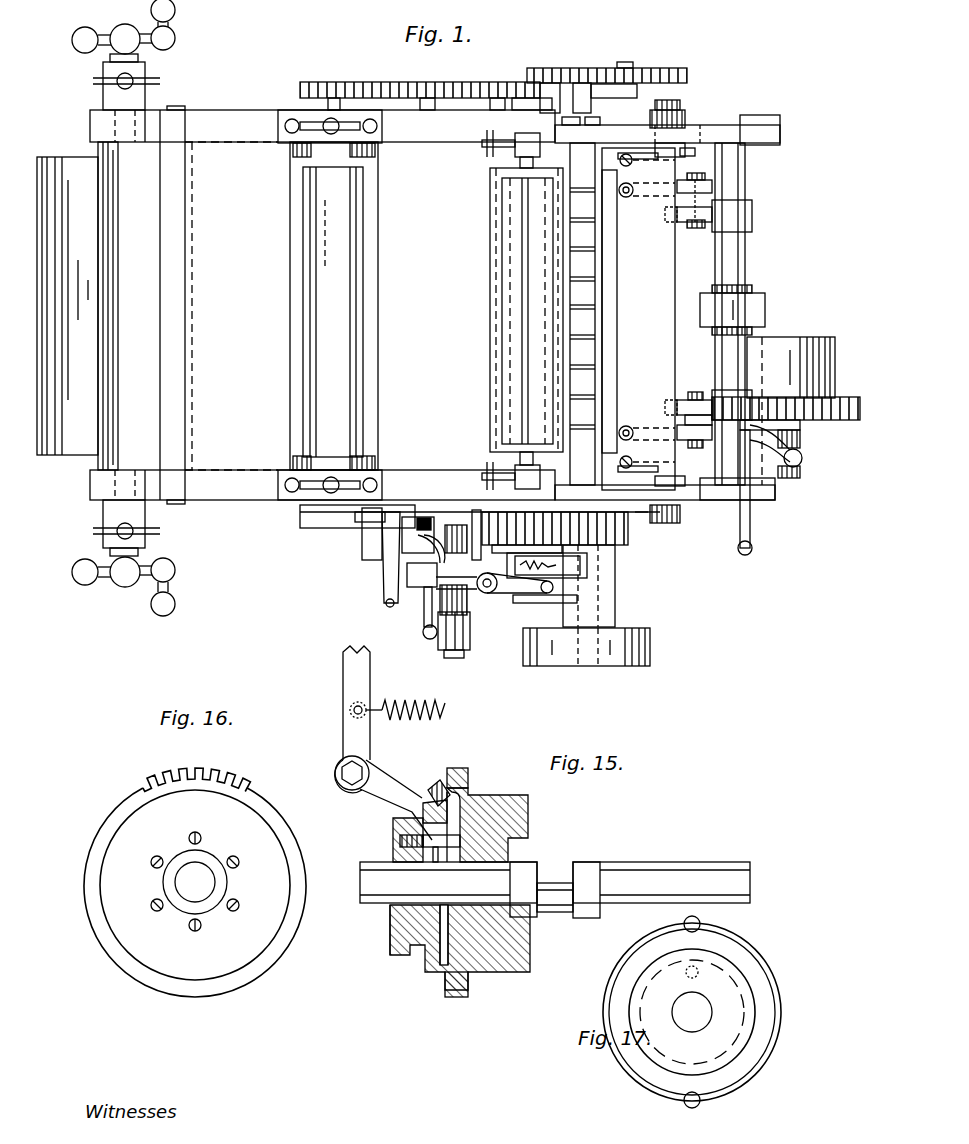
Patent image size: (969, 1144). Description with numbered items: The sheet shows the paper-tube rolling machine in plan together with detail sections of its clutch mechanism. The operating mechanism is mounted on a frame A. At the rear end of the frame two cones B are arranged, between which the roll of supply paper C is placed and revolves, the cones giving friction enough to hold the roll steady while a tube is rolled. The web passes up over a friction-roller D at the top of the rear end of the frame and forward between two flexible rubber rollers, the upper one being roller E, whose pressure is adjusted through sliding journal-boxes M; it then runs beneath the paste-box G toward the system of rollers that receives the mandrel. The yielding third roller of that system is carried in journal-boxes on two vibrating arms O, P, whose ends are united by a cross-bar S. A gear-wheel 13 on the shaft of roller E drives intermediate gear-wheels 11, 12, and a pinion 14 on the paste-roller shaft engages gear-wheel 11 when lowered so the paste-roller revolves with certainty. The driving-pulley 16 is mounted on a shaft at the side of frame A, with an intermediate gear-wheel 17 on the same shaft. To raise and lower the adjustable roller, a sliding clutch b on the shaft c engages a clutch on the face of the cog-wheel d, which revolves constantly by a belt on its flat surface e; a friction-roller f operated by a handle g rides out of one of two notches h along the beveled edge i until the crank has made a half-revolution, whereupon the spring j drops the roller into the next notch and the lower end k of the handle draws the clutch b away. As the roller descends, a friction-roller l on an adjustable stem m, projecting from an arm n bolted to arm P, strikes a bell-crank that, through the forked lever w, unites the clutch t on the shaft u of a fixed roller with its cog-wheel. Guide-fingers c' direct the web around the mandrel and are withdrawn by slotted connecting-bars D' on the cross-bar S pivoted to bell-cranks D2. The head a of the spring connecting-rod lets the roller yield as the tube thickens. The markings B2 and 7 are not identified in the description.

In FIG. 1, the frame A is at (322, 305).
In FIG. 1, the cones B is at (118, 150).
In FIG. 1, the roll of supply paper C is at (67, 306).
In FIG. 1, the friction-roller D is at (114, 306).
In FIG. 1, the upper flexible roller E is at (334, 306).
In FIG. 1, the paste-box G is at (522, 310).
In FIG. 1, the sliding journal-boxes M is at (330, 310).
In FIG. 1, the vibrating arm O is at (667, 307).
In FIG. 1, the vibrating arm P is at (630, 500).
In FIG. 1, the cross-bar S is at (732, 314).
In FIG. 1, the guide-fingers c' is at (582, 314).
In FIG. 1, the bell-cranks D2 is at (708, 195).
In FIG. 1, the slotted connecting-bars D' is at (708, 338).
In FIG. 1, the head a is at (674, 312).
In FIG. 1, the sliding clutch b is at (771, 458).
In FIG. 15, the sliding clutch b is at (381, 930).
In FIG. 15, the shaft c is at (555, 890).
In FIG. 1, the cog-wheel d is at (786, 418).
In FIG. 15, the cog-wheel d is at (458, 882).
In FIG. 1, the flat surface e is at (797, 411).
In FIG. 15, the flat surface e is at (460, 883).
In FIG. 15, the friction-roller f is at (439, 785).
In FIG. 1, the handle g is at (750, 497).
In FIG. 15, the handle g is at (383, 743).
In FIG. 17, the notches h is at (692, 1015).
In FIG. 15, the beveled edge i is at (440, 962).
In FIG. 15, the spring j is at (397, 717).
In FIG. 15, the lower end of handle k is at (400, 813).
In FIG. 1, the friction-roller l is at (348, 525).
In FIG. 1, the adjustable stem m is at (375, 530).
In FIG. 1, the arm n is at (555, 528).
In FIG. 1, the clutch t is at (547, 565).
In FIG. 1, the shaft u is at (527, 549).
In FIG. 1, the forked lever w is at (506, 586).
In FIG. 1, the pawl B2 is at (441, 548).
In FIG. 1, the pawl 7 is at (440, 505).
In FIG. 1, the intermediate gear-wheel 11 is at (496, 86).
In FIG. 1, the intermediate gear-wheel 12 is at (420, 85).
In FIG. 1, the gear-wheel 13 is at (420, 85).
In FIG. 1, the pinion 14 is at (526, 66).
In FIG. 1, the driving-pulley 16 is at (603, 605).
In FIG. 1, the intermediate gear-wheel 17 is at (633, 534).